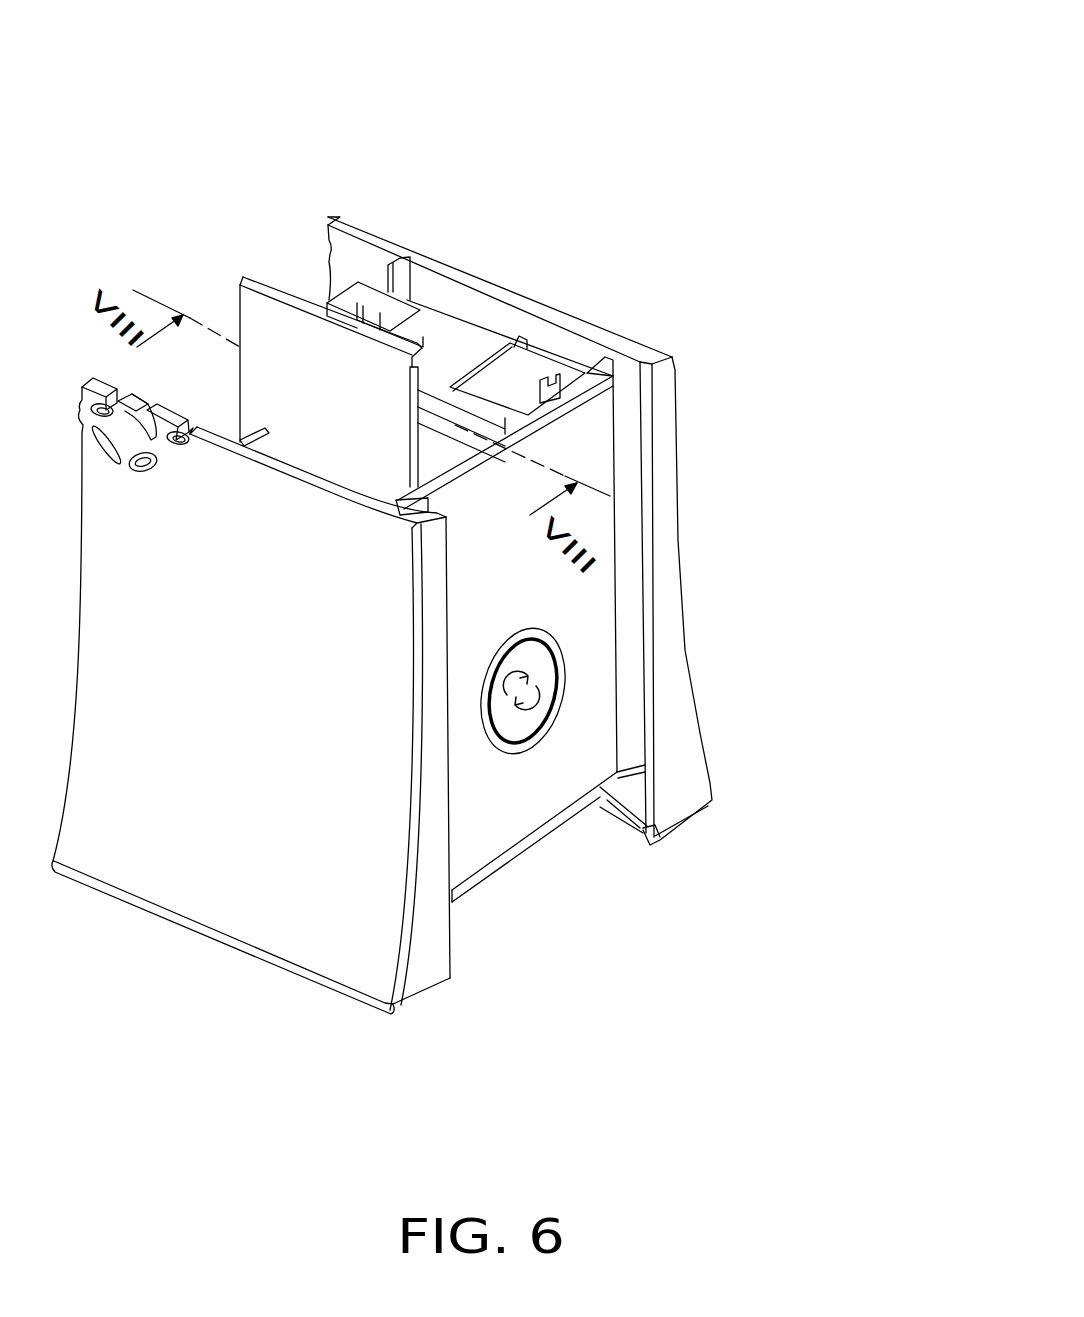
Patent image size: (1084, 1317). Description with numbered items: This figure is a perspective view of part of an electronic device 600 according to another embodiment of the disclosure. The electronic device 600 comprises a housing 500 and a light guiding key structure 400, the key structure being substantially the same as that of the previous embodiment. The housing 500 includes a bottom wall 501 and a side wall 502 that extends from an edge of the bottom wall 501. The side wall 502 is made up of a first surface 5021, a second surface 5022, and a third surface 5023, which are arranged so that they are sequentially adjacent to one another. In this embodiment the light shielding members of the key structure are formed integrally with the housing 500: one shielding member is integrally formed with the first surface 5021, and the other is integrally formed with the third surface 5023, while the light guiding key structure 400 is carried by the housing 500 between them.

The electronic device 600 is at (345, 63).
The housing 500 is at (877, 645).
The bottom wall 501 is at (533, 848).
The side wall 502 is at (803, 588).
The first surface 5021 is at (685, 630).
The second surface 5022 is at (587, 652).
The third surface 5023 is at (393, 632).
The light guiding key structure 400 is at (509, 716).